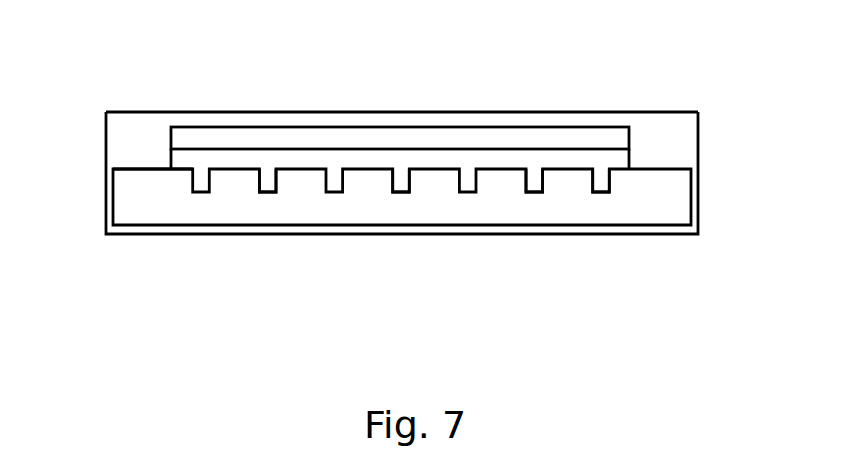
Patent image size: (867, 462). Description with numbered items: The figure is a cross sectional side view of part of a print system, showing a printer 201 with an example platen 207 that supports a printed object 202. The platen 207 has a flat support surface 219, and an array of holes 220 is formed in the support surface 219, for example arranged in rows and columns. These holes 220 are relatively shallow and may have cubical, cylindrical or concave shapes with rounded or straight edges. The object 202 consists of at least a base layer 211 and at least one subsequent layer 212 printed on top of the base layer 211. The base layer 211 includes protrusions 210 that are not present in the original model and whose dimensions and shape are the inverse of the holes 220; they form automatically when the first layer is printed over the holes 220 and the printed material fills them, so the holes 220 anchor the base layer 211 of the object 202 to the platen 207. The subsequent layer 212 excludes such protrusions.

The printer 201 is at (700, 172).
The object 202 is at (537, 117).
The platen 207 is at (135, 203).
The protrusions 210 is at (403, 185).
The base layer 211 is at (608, 160).
The subsequent layer 212 is at (238, 135).
The support surface 219 is at (145, 168).
The holes 220 is at (270, 192).